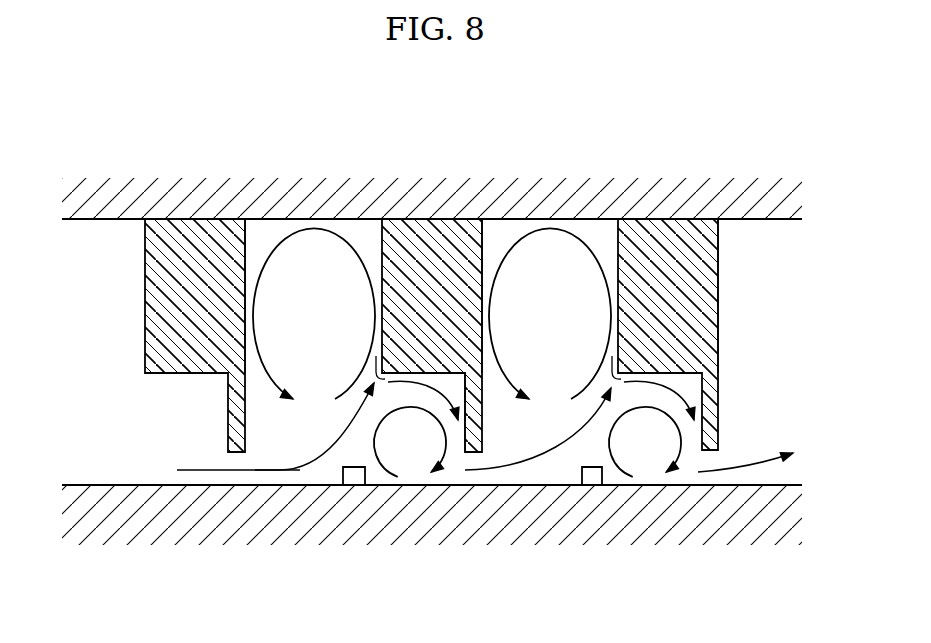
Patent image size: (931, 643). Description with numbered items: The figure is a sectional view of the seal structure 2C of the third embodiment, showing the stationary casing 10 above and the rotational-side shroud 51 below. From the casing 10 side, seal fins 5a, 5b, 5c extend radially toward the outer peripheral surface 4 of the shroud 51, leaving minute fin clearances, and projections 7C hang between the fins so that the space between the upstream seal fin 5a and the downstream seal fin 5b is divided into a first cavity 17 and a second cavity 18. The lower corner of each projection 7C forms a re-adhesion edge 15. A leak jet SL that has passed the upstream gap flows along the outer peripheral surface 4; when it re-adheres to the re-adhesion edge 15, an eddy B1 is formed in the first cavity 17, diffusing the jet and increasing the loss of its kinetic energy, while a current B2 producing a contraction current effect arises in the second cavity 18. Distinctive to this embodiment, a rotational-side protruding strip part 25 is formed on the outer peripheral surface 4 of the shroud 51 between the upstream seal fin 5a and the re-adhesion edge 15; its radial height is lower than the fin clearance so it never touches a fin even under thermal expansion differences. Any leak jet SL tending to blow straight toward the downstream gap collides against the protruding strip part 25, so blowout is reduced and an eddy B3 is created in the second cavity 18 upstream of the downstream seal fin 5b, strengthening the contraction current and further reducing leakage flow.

The casing 10 is at (83, 221).
The projection 7C is at (190, 232).
The upstream seal fin 5a is at (245, 243).
The downstream seal fin 5b is at (483, 242).
The seal fin 5c is at (716, 280).
The first cavity 17 is at (338, 268).
The re-adhesion edge 15 is at (378, 366).
The seal structure 2C is at (102, 340).
The outer peripheral surface 4 is at (118, 484).
The shroud 51 is at (87, 495).
The rotational-side protruding strip part 25 is at (353, 472).
The leak jet SL is at (277, 472).
The second cavity 18 is at (452, 432).
The eddy B1 is at (257, 280).
The current B2 is at (450, 402).
The eddy B3 is at (389, 414).